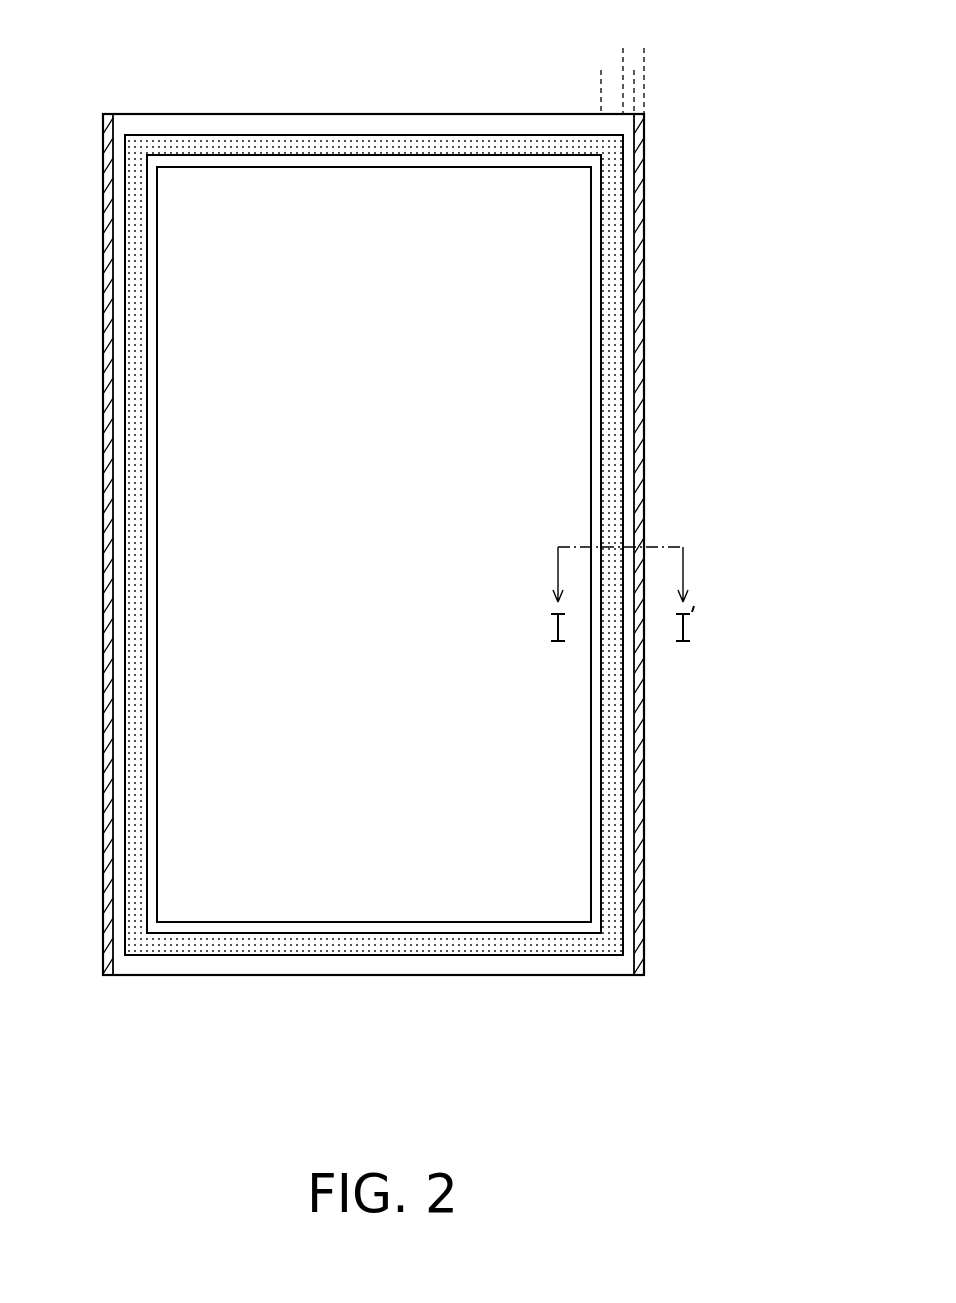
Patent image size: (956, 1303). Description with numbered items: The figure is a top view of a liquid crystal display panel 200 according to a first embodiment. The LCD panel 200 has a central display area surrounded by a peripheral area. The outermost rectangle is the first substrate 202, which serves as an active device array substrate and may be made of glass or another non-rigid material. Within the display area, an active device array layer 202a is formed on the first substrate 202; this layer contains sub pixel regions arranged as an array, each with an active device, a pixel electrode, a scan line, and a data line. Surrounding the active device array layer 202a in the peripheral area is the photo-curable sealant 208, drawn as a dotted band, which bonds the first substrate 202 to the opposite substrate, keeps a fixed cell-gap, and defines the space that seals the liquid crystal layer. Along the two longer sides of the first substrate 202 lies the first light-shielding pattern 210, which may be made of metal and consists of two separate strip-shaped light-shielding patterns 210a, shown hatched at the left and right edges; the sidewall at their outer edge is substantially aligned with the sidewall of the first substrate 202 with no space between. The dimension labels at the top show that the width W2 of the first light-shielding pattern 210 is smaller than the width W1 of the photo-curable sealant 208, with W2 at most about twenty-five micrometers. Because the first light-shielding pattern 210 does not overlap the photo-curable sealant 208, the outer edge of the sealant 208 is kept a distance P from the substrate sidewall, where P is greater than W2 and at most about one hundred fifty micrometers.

The LCD panel 200 is at (462, 536).
The first substrate 202 is at (572, 977).
The active device array layer 202a is at (568, 302).
The photo-curable sealant 208 is at (618, 243).
The first light-shielding pattern 210 is at (462, 544).
The strip-shaped light-shielding pattern 210a is at (638, 343).
The distance P is at (639, 54).
The width of the photo-curable sealant W1 is at (612, 77).
The width of the first light-shielding pattern W2 is at (634, 75).